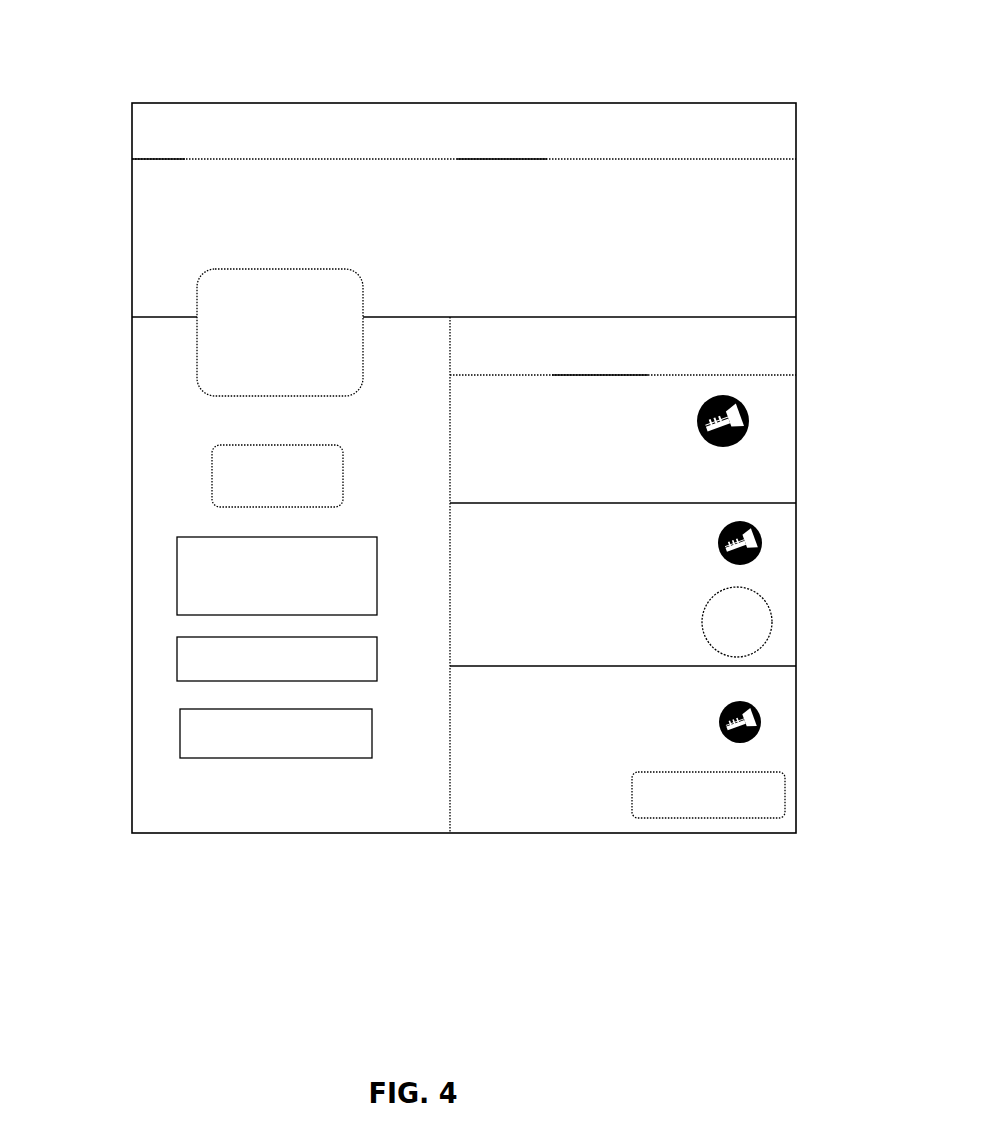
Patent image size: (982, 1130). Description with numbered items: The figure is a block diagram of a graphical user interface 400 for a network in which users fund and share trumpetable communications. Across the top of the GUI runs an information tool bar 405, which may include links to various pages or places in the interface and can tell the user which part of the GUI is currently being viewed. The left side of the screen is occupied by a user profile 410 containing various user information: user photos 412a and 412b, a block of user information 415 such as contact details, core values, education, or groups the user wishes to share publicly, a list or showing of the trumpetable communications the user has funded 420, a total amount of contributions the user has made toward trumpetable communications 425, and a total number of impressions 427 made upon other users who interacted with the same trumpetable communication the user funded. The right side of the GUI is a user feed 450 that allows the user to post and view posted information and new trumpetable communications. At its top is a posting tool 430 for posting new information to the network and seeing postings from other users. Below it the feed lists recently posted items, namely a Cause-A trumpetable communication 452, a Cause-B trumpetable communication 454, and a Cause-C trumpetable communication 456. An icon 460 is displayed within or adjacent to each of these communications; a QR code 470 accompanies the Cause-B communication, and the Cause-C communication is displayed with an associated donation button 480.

The graphical user interface 400 is at (734, 50).
The information tool bar 405 is at (464, 139).
The user profile 410 is at (163, 786).
The user photo 412a is at (280, 332).
The user photo 412b is at (464, 272).
The user information 415 is at (277, 476).
The list of trumpetable communications the user has funded 420 is at (277, 576).
The total amount of contributions 425 is at (277, 659).
The total number of impressions 427 is at (276, 733).
The posting tool 430 is at (623, 350).
The user feed 450 is at (758, 843).
The Cause-A trumpetable communication 452 is at (623, 460).
The Cause-B trumpetable communication 454 is at (623, 619).
The Cause-C trumpetable communication 456 is at (621, 735).
The icon 460 is at (758, 702).
The QR code 470 is at (762, 612).
The donation button 480 is at (773, 782).